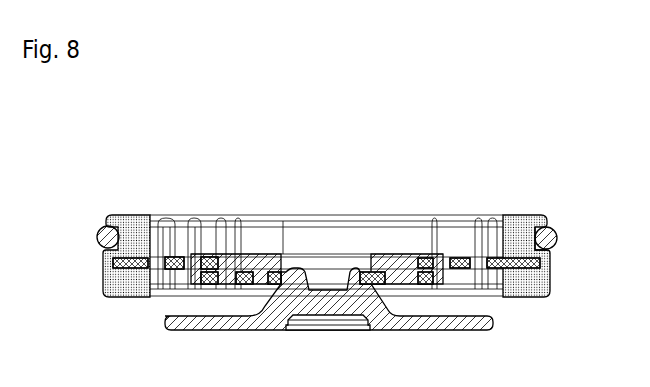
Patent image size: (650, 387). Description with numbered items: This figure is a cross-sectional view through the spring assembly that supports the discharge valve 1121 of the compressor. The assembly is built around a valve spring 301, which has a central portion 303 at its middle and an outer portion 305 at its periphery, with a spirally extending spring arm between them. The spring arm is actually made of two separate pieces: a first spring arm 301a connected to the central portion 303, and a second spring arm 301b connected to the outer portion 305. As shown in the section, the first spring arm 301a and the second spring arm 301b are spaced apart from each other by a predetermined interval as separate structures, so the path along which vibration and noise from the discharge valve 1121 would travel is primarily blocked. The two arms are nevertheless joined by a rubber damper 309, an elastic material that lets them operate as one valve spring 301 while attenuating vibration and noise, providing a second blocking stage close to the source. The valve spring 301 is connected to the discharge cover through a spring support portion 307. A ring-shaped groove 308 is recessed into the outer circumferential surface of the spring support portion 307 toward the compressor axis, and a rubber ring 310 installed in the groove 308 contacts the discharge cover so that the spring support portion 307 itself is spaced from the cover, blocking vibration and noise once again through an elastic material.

The valve spring 301 is at (255, 161).
The first spring arm 301a is at (245, 271).
The second spring arm 301b is at (202, 258).
The central portion 303 is at (371, 291).
The outer portion 305 is at (115, 262).
The spring support portion 307 is at (519, 226).
The groove 308 is at (548, 249).
The rubber damper 309 is at (396, 255).
The rubber ring 310 is at (556, 234).
The discharge valve 1121 is at (267, 322).